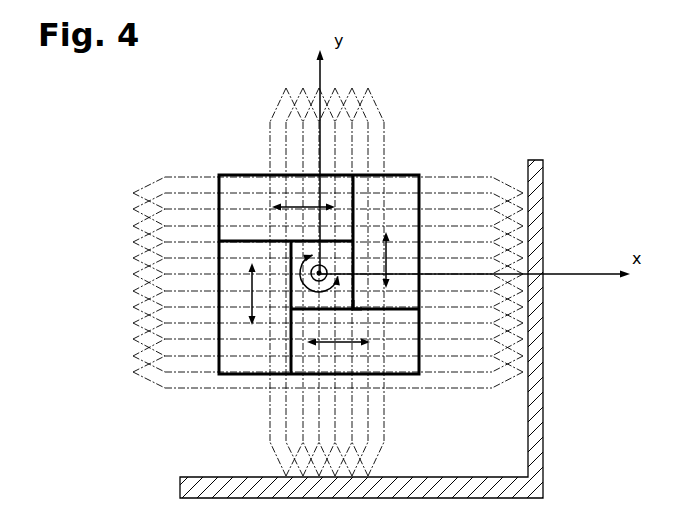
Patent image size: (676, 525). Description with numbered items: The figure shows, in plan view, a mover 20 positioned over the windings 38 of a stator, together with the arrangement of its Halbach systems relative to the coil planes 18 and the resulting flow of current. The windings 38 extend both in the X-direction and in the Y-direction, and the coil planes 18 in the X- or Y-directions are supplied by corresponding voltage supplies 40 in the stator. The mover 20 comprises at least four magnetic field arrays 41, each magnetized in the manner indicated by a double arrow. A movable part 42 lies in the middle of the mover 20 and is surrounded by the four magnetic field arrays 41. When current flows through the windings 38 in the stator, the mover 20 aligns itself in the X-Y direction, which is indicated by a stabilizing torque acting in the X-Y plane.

The coil planes 18 is at (272, 148).
The mover 20 is at (427, 165).
The windings 38 is at (316, 288).
The voltage supplies 40 is at (537, 449).
The magnetic field arrays 41 is at (217, 199).
The movable part 42 is at (345, 297).